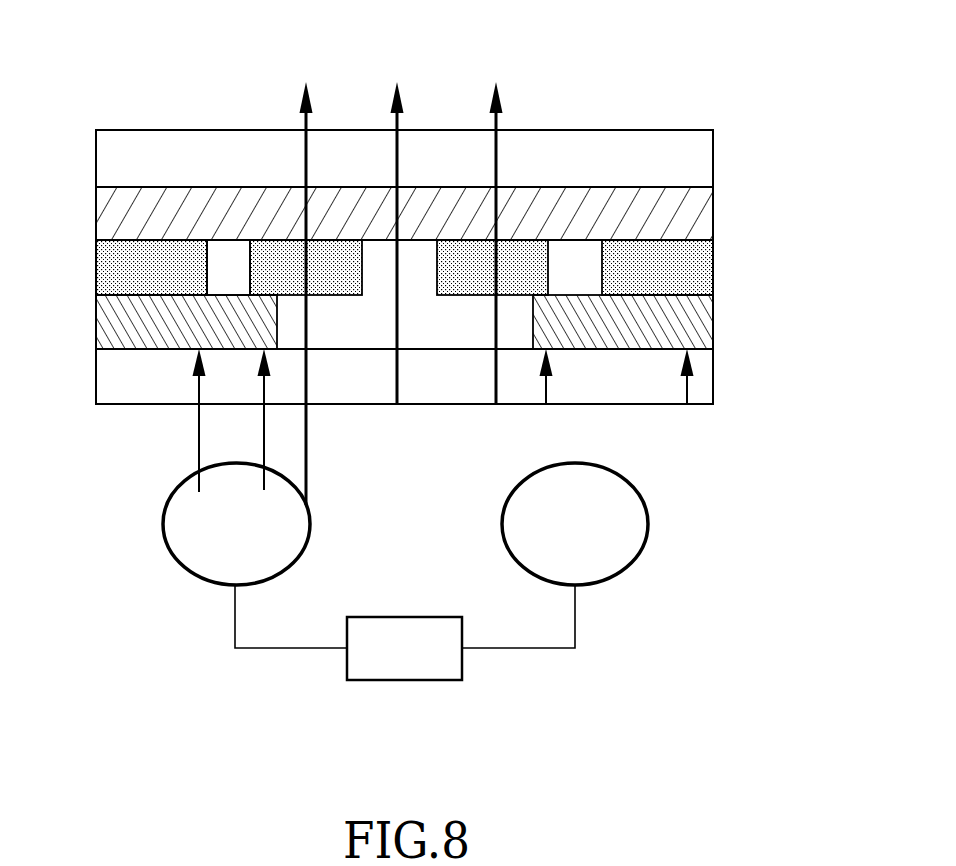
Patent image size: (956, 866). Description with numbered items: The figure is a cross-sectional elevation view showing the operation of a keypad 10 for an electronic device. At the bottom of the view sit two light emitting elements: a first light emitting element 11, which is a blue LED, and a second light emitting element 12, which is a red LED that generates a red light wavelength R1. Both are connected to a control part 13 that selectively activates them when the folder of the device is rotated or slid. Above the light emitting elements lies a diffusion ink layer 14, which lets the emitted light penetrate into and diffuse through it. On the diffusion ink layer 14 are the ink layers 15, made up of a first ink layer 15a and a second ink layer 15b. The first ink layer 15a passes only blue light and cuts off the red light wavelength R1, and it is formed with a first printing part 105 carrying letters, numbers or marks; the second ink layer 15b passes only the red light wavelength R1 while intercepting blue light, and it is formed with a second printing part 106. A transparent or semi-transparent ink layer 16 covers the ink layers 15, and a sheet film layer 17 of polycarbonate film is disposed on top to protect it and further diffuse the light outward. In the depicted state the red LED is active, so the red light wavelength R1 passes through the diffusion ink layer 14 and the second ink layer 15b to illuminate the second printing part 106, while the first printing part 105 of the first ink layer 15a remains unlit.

The keypad 10 is at (675, 73).
The first light emitting element 11 is at (636, 523).
The second light emitting element 12 is at (172, 522).
The control part 13 is at (405, 616).
The diffusion ink layer 14 is at (702, 373).
The ink layers 15 is at (436, 294).
The first ink layer 15a is at (413, 322).
The second ink layer 15b is at (703, 270).
The transparent or semi-transparent ink layer 16 is at (703, 214).
The sheet film layer 17 is at (703, 159).
The first printing part 105 is at (288, 329).
The second printing part 106 is at (233, 258).
The red light wavelength R1 is at (198, 440).